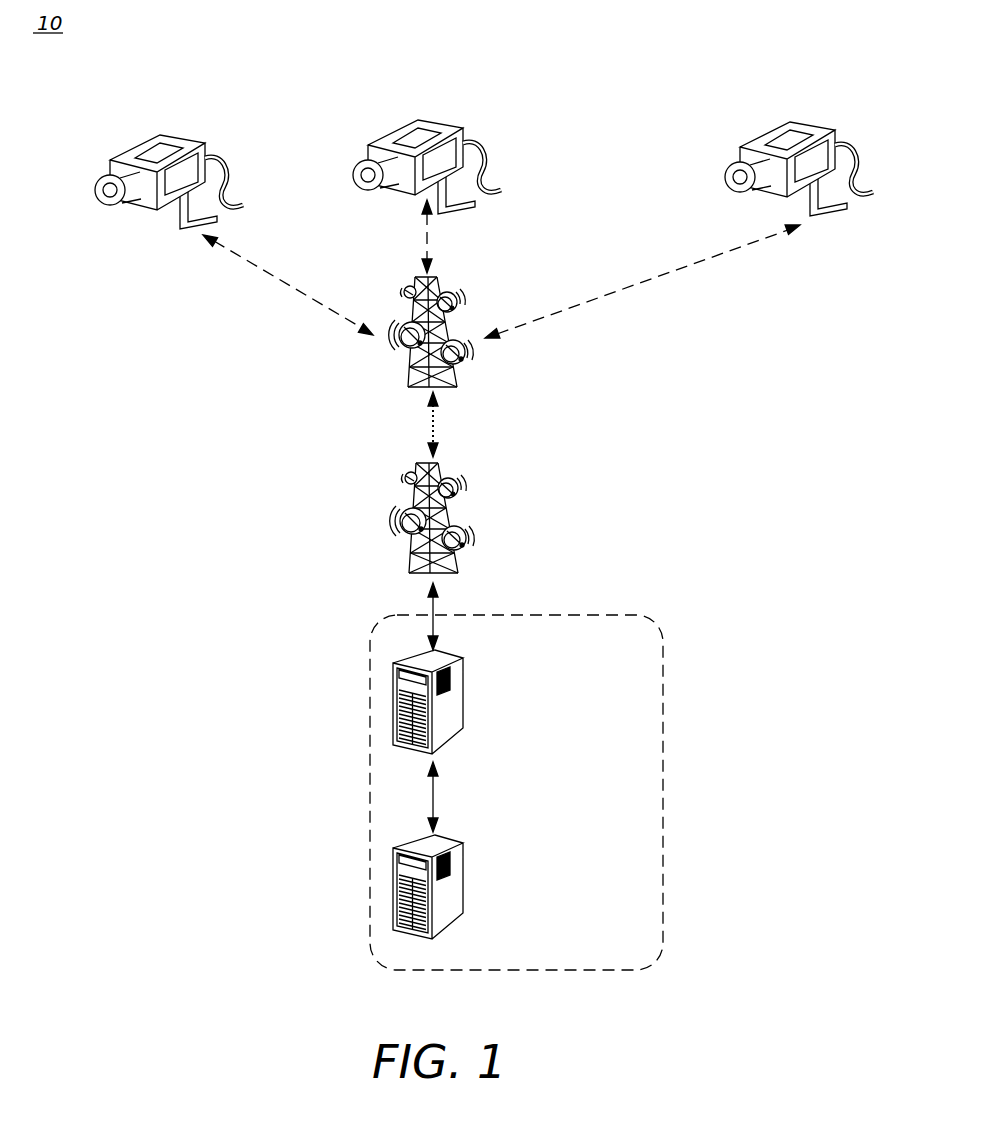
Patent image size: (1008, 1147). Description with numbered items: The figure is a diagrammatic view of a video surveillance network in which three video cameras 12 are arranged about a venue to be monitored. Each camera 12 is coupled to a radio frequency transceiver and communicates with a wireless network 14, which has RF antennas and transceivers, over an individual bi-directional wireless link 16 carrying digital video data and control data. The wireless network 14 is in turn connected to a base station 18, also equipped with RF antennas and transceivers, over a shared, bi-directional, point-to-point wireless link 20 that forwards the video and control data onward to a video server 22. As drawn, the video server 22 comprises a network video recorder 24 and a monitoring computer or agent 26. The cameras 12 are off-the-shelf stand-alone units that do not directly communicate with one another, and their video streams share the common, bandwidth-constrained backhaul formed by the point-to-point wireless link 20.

The video camera 12 is at (112, 159).
The wireless network 14 is at (412, 368).
The bi-directional wireless link 16 is at (270, 275).
The base station 18 is at (410, 485).
The point-to-point wireless link 20 is at (430, 425).
The video server 22 is at (370, 752).
The network video recorder 24 is at (457, 842).
The monitoring agent 26 is at (463, 658).